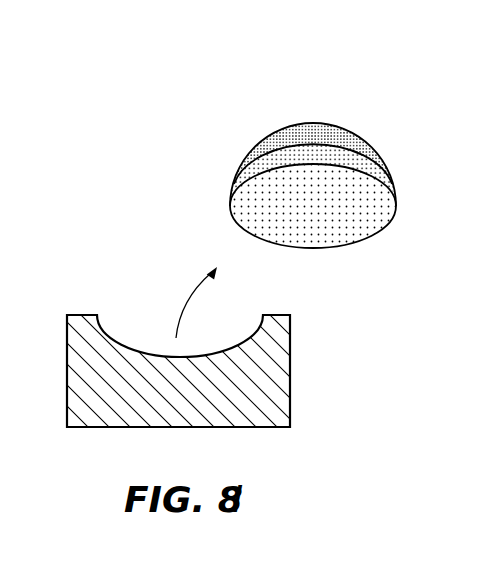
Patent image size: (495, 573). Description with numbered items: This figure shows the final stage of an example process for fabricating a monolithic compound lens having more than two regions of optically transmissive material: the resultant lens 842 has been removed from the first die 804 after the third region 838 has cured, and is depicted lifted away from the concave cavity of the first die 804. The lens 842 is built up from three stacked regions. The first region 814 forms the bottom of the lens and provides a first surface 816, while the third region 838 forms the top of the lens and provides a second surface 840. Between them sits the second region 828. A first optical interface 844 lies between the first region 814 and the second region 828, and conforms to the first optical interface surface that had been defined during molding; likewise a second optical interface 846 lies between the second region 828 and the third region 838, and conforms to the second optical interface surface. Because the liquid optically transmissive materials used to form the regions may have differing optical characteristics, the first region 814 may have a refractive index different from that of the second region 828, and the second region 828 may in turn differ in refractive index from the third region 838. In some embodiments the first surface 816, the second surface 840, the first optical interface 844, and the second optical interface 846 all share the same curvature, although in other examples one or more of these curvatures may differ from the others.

The first die 804 is at (290, 399).
The first region 814 is at (354, 171).
The first surface 816 is at (315, 260).
The second region 828 is at (252, 163).
The third region 838 is at (270, 140).
The second surface 840 is at (312, 112).
The lens 842 is at (398, 210).
The first optical interface 844 is at (372, 170).
The second optical interface 846 is at (358, 142).